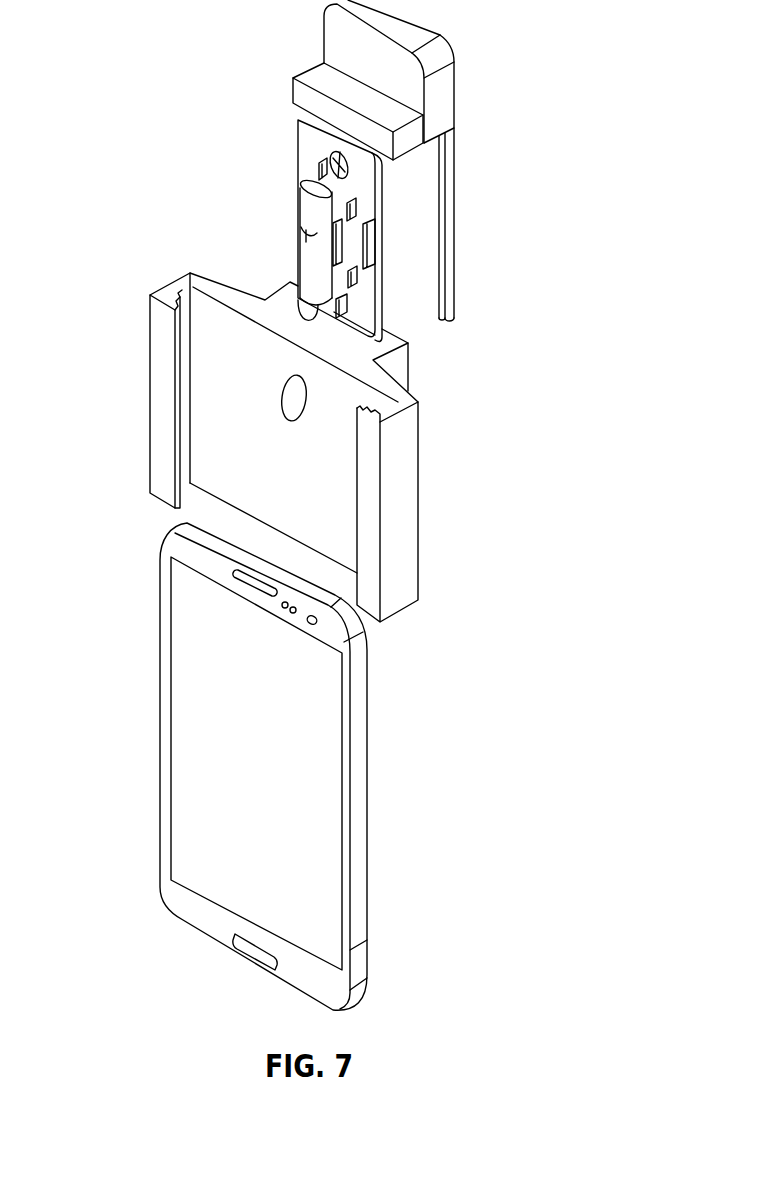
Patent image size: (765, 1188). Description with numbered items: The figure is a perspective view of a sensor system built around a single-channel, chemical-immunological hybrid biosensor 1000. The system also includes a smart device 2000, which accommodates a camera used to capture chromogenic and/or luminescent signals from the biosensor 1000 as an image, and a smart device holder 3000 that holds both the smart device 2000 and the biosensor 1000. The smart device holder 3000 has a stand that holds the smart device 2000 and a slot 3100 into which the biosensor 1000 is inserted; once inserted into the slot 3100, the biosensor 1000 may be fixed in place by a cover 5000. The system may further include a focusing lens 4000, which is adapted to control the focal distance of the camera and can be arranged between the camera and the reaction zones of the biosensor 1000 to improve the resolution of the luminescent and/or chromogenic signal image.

The cover 5000 is at (443, 110).
The single-channel, chemical-immunological hybrid biosensor 1000 is at (383, 207).
The slot 3100 is at (393, 325).
The smart device holder 3000 is at (403, 465).
The focusing lens 4000 is at (292, 397).
The smart device 2000 is at (368, 733).